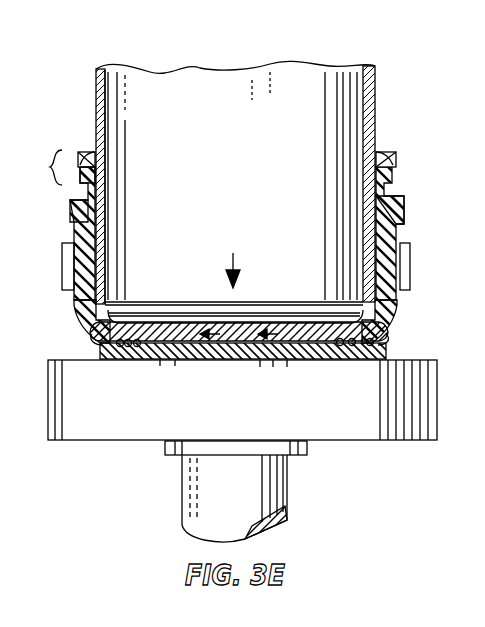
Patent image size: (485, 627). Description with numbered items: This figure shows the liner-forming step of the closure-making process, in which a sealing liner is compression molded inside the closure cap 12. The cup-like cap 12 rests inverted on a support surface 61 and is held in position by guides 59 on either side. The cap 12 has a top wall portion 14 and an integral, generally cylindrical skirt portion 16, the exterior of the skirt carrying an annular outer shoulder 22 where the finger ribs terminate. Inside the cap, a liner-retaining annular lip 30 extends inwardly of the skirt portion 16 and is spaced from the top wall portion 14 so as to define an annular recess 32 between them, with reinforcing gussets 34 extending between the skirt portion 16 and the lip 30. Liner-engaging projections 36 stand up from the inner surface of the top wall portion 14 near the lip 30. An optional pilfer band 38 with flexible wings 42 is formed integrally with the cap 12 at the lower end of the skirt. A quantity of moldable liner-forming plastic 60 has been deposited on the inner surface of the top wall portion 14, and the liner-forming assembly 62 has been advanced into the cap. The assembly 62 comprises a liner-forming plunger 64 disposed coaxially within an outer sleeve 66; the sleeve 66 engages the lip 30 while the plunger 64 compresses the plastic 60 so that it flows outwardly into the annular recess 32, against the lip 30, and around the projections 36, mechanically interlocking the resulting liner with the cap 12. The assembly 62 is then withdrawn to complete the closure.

The closure cap 12 is at (62, 232).
The top wall portion 14 is at (308, 358).
The skirt portion 16 is at (393, 238).
The annular outer shoulder 22 is at (72, 212).
The liner-retaining annular lip 30 is at (105, 323).
The annular recess 32 is at (93, 340).
The reinforcing gussets 34 is at (100, 301).
The liner-engaging projections 36 is at (134, 348).
The pilfer band 38 is at (58, 167).
The wings 42 is at (88, 156).
The guides 59 is at (62, 268).
The liner-forming plastic 60 is at (198, 342).
The support surface 61 is at (65, 432).
The liner-forming assembly 62 is at (230, 163).
The liner-forming plunger 64 is at (190, 85).
The outer sleeve 66 is at (96, 100).